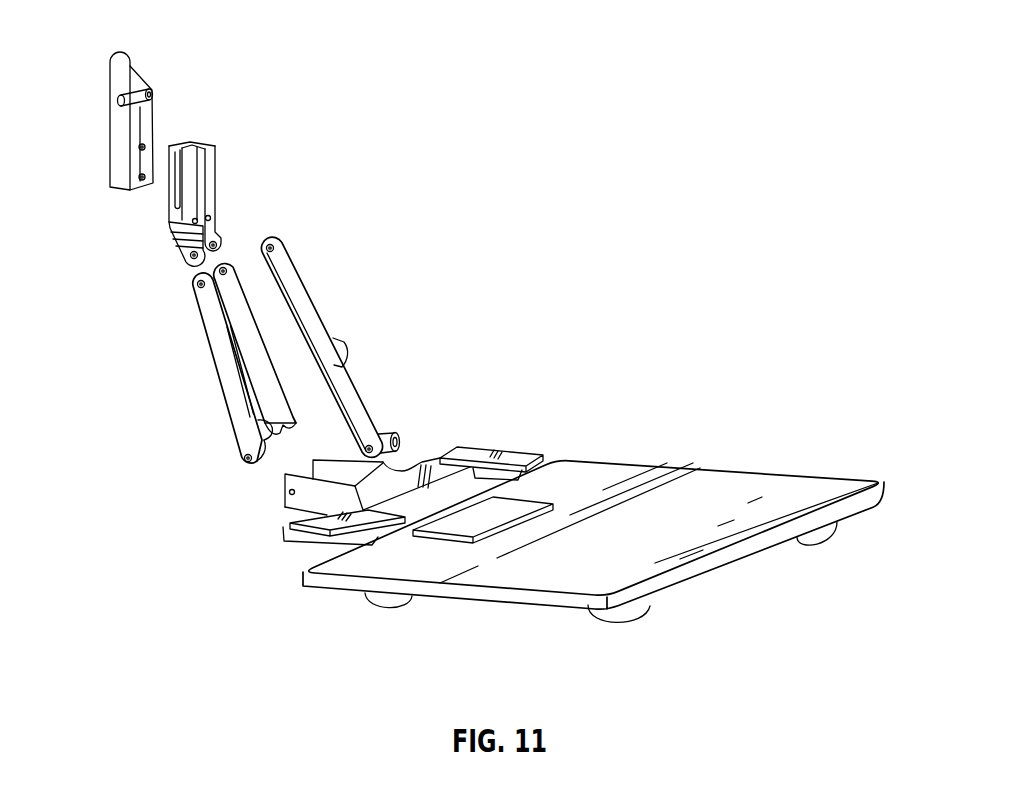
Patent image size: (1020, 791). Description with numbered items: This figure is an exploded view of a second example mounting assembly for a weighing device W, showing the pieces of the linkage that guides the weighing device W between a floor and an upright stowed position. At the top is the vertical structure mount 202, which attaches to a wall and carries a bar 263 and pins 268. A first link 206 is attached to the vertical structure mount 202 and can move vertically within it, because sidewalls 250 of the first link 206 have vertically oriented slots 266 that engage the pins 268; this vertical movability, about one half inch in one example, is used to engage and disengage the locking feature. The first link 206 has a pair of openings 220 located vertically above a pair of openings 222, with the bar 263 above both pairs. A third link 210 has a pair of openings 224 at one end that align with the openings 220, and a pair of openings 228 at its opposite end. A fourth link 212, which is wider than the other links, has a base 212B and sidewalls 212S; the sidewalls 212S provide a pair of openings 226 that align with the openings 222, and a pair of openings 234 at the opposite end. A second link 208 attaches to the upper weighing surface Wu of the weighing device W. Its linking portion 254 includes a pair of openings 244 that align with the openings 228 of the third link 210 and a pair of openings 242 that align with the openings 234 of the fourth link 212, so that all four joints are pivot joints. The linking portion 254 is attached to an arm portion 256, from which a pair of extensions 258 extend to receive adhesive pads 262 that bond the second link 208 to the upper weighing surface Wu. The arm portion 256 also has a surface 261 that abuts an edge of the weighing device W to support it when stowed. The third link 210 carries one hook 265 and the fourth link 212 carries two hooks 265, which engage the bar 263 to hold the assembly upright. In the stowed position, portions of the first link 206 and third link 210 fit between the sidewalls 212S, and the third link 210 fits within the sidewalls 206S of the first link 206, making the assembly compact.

The vertical structure mount 202 is at (120, 121).
The first link 206 is at (187, 141).
The sidewalls of the first link 206S is at (207, 143).
The second link 208 is at (262, 516).
The third link 210 is at (309, 301).
The fourth link 212 is at (240, 438).
The sidewalls of the fourth link 212S is at (228, 388).
The base of the fourth link 212B is at (225, 403).
The pair of openings 220 is at (187, 263).
The pair of openings 222 is at (222, 247).
The pair of openings 224 is at (244, 347).
The pair of openings 226 is at (200, 292).
The pair of openings 228 is at (365, 447).
The pair of openings 234 is at (244, 462).
The pair of openings 242 is at (293, 510).
The pair of openings 244 is at (284, 505).
The sidewalls of the first link 250 is at (197, 141).
The linking portion 254 is at (272, 491).
The arm portion 256 is at (442, 474).
The extensions 258 is at (527, 457).
The surface 261 is at (347, 487).
The adhesive pads 262 is at (493, 477).
The bar 263 is at (140, 92).
The hooks 265 is at (348, 352).
The vertically oriented slots 266 is at (186, 222).
The pins 268 is at (138, 176).
The weighing device W is at (797, 494).
The upper weighing surface Wu is at (698, 488).